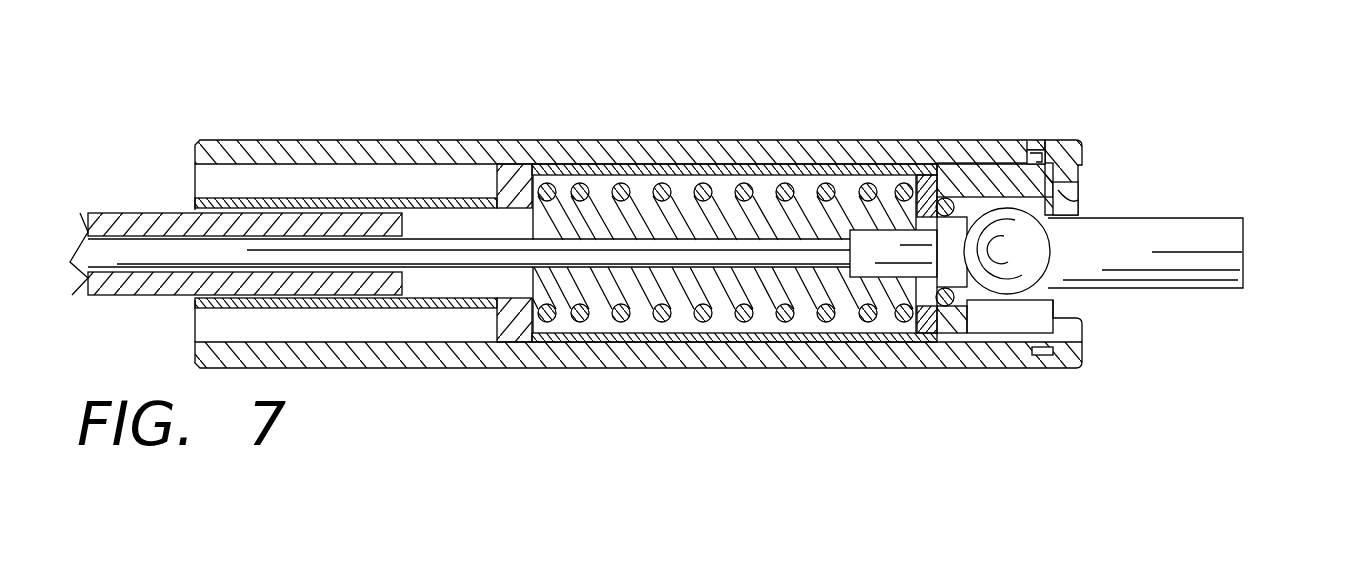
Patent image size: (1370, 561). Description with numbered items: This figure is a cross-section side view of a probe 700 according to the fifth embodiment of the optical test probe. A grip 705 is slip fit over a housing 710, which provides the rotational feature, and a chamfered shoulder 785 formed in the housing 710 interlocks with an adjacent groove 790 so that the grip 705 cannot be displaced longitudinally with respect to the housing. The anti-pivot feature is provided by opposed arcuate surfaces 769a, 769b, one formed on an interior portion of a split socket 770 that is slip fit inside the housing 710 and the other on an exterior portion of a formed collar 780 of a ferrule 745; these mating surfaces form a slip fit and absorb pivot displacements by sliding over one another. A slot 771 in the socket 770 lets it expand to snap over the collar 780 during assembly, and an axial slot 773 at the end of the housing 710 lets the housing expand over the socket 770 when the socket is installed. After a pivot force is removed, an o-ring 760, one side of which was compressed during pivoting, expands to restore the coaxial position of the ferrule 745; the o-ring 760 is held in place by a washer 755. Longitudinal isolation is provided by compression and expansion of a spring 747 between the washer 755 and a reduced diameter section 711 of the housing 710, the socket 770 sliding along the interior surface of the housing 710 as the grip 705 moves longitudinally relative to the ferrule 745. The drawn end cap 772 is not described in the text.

The probe 700 is at (658, 124).
The grip 705 is at (275, 143).
The housing 710 is at (412, 197).
The reduced diameter section 711 is at (520, 190).
The ferrule 745 is at (1232, 264).
The spring 747 is at (690, 300).
The washer 755 is at (917, 333).
The o-ring 760 is at (880, 230).
The arcuate surface 769a is at (1028, 305).
The arcuate surface 769b is at (968, 303).
The split socket 770 is at (945, 197).
The slot 771 is at (1045, 315).
The end cap 772 is at (1085, 203).
The axial slot 773 is at (1080, 343).
The formed collar 780 is at (1028, 244).
The chamfered shoulder 785 is at (1040, 142).
The groove 790 is at (1017, 152).